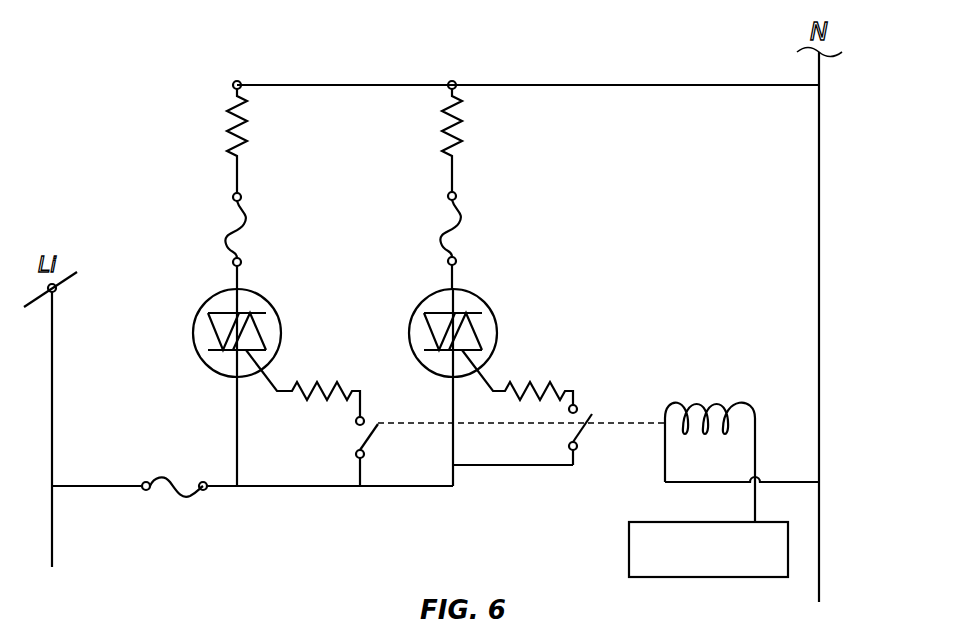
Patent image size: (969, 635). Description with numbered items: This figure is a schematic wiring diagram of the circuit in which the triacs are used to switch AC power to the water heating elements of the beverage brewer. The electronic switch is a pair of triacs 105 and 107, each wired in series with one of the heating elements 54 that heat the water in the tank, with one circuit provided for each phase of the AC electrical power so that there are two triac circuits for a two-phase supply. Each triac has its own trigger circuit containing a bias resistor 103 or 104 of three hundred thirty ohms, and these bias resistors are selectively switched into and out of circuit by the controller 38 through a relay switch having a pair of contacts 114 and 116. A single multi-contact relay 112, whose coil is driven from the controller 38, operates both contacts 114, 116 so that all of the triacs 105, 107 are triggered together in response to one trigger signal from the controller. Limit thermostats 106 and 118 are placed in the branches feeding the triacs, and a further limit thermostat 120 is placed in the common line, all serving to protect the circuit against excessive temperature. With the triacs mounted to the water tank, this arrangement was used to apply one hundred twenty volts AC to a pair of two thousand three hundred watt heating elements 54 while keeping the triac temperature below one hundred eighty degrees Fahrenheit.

The heating element 54 is at (244, 150).
The limit thermostat 118 is at (247, 218).
The limit thermostat 106 is at (462, 216).
The triac 107 is at (194, 334).
The triac 105 is at (492, 306).
The bias resistor 103 is at (315, 394).
The bias resistor 104 is at (528, 393).
The relay switch contact 116 is at (374, 434).
The relay switch contact 114 is at (587, 432).
The multi-contact relay 112 is at (716, 403).
The limit thermostat 120 is at (170, 484).
The controller 38 is at (629, 538).